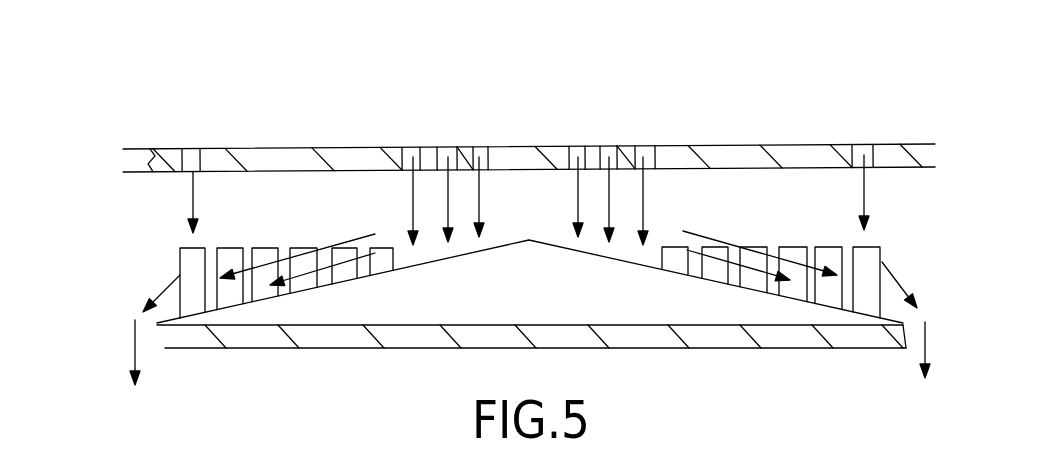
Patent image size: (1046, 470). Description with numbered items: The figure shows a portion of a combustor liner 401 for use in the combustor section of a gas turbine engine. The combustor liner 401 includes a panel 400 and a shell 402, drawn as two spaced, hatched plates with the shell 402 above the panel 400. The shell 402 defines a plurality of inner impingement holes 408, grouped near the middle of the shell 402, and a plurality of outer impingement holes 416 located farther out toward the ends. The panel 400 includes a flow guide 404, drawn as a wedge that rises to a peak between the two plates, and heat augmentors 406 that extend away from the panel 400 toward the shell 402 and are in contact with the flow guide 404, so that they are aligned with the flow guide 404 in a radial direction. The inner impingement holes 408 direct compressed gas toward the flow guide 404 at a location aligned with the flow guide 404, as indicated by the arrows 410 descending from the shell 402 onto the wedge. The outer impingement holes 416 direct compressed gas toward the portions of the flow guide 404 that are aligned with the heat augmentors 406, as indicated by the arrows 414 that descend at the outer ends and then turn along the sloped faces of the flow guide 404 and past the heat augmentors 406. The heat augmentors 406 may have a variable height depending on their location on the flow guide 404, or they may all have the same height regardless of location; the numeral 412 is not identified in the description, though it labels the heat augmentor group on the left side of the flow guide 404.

The panel 400 is at (188, 327).
The combustor liner 401 is at (90, 137).
The shell 402 is at (148, 149).
The flow guide 404 is at (549, 300).
The heat augmentors 406 is at (894, 255).
The inner impingement holes 408 is at (415, 143).
The arrows 410 is at (490, 173).
The left heat sink fins 412 is at (372, 234).
The arrows 414 is at (193, 198).
The outer impingement holes 416 is at (203, 152).